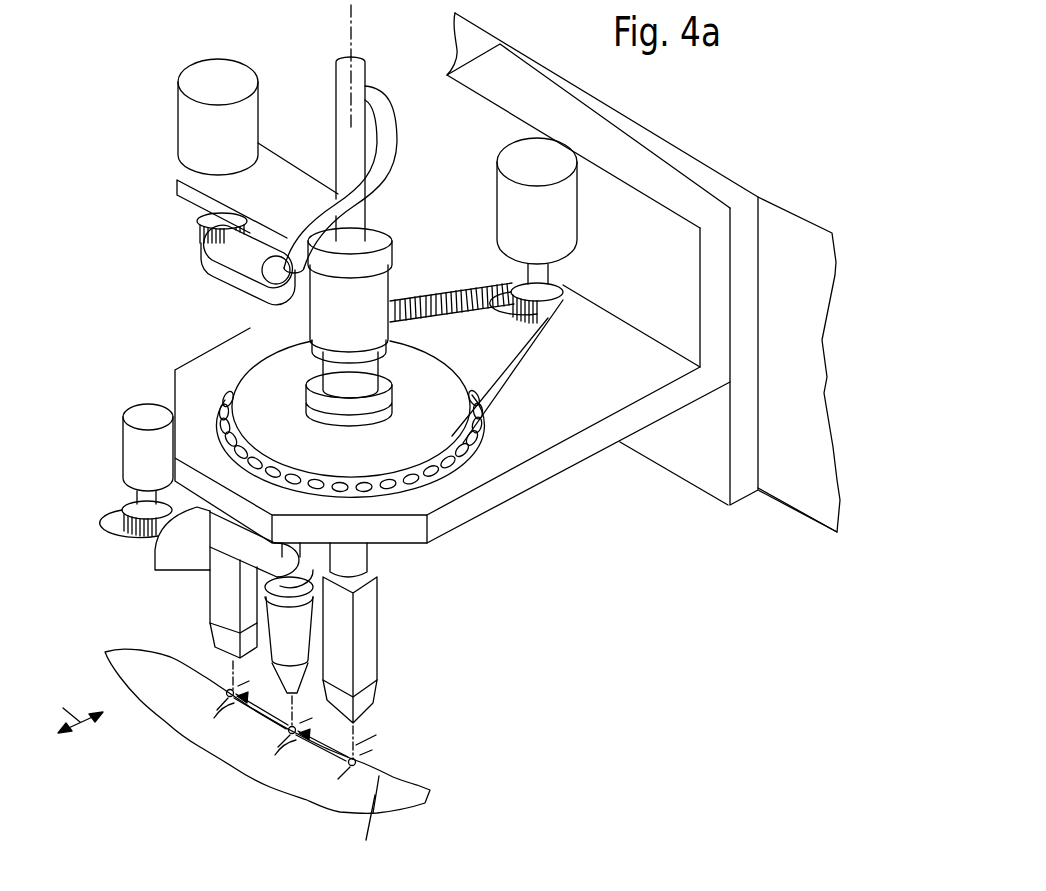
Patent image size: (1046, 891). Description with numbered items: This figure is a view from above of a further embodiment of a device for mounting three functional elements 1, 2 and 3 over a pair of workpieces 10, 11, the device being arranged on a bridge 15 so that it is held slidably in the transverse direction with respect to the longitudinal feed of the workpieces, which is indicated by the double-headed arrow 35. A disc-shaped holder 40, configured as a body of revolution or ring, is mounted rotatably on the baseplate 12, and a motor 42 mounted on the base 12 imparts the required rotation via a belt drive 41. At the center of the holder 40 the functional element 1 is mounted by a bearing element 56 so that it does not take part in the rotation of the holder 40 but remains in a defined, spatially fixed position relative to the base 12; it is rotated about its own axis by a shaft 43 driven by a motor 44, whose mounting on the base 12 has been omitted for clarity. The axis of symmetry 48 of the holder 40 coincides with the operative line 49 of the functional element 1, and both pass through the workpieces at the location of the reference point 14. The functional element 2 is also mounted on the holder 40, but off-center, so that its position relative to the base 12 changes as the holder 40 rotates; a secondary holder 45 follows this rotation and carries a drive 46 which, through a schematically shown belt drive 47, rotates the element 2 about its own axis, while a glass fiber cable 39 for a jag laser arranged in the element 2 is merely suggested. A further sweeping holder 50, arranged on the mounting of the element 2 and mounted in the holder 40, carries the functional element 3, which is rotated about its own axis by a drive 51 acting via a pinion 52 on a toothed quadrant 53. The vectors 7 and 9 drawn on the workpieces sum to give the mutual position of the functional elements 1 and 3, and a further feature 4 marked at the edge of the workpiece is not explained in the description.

The functional element 1 is at (370, 660).
The functional element 2 is at (285, 632).
The functional element 3 is at (222, 597).
The workpiece edge 4 is at (366, 833).
The vector 7 is at (327, 753).
The vector 9 is at (263, 720).
The workpiece 10 is at (402, 795).
The workpiece 11 is at (402, 768).
The baseplate 12 is at (577, 393).
The reference point 14 is at (355, 760).
The bridge 15 is at (797, 233).
The double-headed arrow 35 is at (69, 708).
The glass fiber cable 39 is at (384, 118).
The disc-shaped holder 40 is at (447, 403).
The belt drive 41 is at (514, 403).
The motor 42 is at (517, 207).
The shaft 43 is at (355, 558).
The motor 44 is at (345, 317).
The secondary holder 45 is at (250, 185).
The drive 46 is at (195, 118).
The belt drive 47 is at (206, 284).
The axis of symmetry 48 is at (349, 30).
The operative line 49 is at (353, 740).
The sweeping holder 50 is at (253, 560).
The drive 51 is at (137, 458).
The pinion 52 is at (130, 512).
The toothed quadrant 53 is at (163, 550).
The bearing element 56 is at (352, 372).